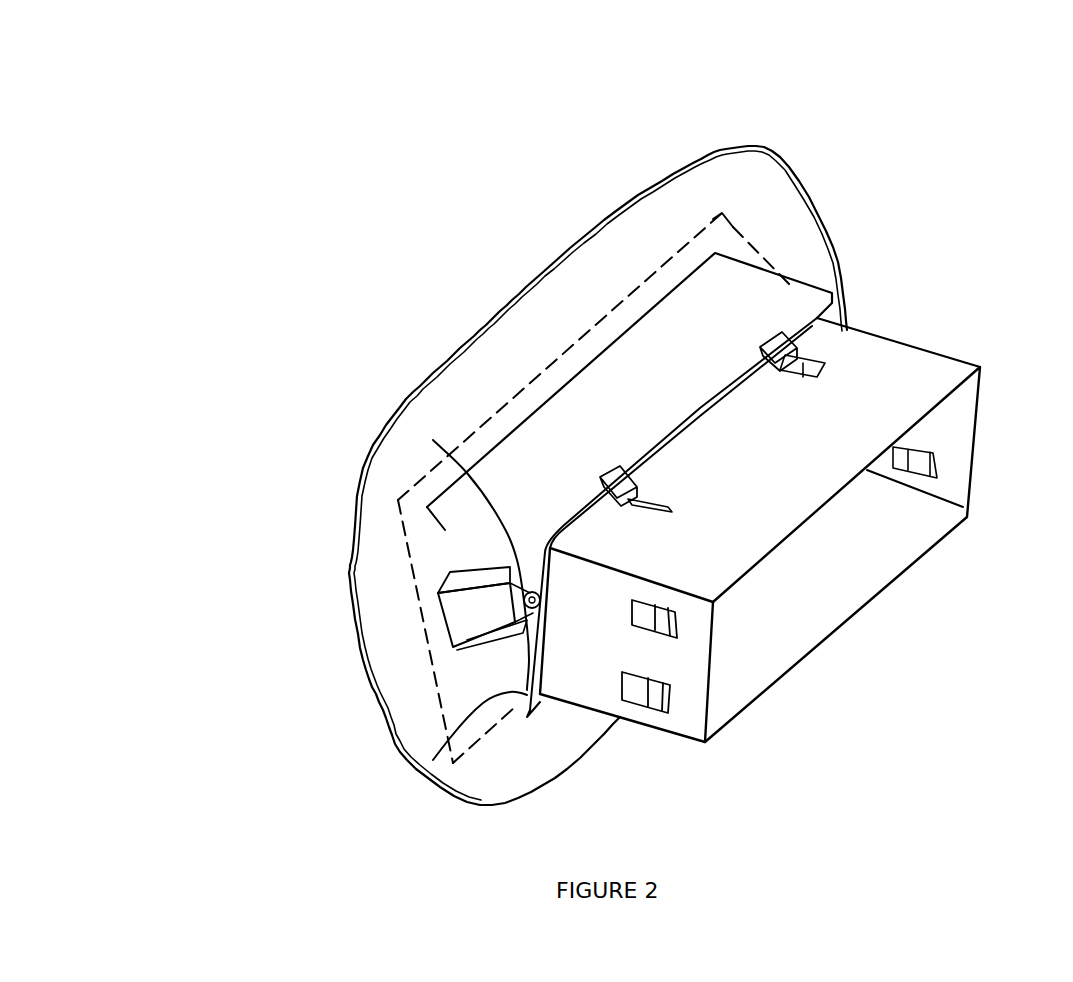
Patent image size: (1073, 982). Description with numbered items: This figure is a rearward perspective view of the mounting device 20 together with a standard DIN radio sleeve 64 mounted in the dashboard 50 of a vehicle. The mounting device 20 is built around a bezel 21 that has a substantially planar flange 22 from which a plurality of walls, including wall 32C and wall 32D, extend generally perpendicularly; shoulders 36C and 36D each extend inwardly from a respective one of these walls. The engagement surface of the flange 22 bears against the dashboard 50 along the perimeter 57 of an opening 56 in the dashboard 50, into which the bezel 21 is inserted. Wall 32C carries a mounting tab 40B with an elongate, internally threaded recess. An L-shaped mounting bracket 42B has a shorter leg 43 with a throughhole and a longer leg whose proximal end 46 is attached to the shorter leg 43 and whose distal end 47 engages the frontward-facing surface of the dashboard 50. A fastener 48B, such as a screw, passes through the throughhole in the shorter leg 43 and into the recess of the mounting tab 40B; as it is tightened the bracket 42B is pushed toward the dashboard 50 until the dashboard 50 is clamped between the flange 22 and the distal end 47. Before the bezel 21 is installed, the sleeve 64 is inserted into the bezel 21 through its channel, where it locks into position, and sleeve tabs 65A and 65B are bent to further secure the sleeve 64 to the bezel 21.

The mounting device 20 is at (700, 134).
The bezel 21 is at (740, 286).
The flange 22 is at (710, 253).
The wall 32C is at (445, 530).
The wall 32D is at (625, 367).
The shoulder 36C is at (497, 697).
The shoulder 36D is at (718, 397).
The mounting tab 40B is at (487, 575).
The mounting bracket 42B is at (445, 615).
The shorter leg 43 is at (545, 548).
The proximal end 46 is at (470, 650).
The distal end 47 is at (453, 647).
The fastener 48B is at (433, 440).
The dashboard 50 is at (467, 362).
The opening 56 is at (438, 593).
The perimeter 57 is at (533, 462).
The sleeve 64 is at (922, 388).
The sleeve tab 65A is at (522, 462).
The sleeve tab 65B is at (770, 335).